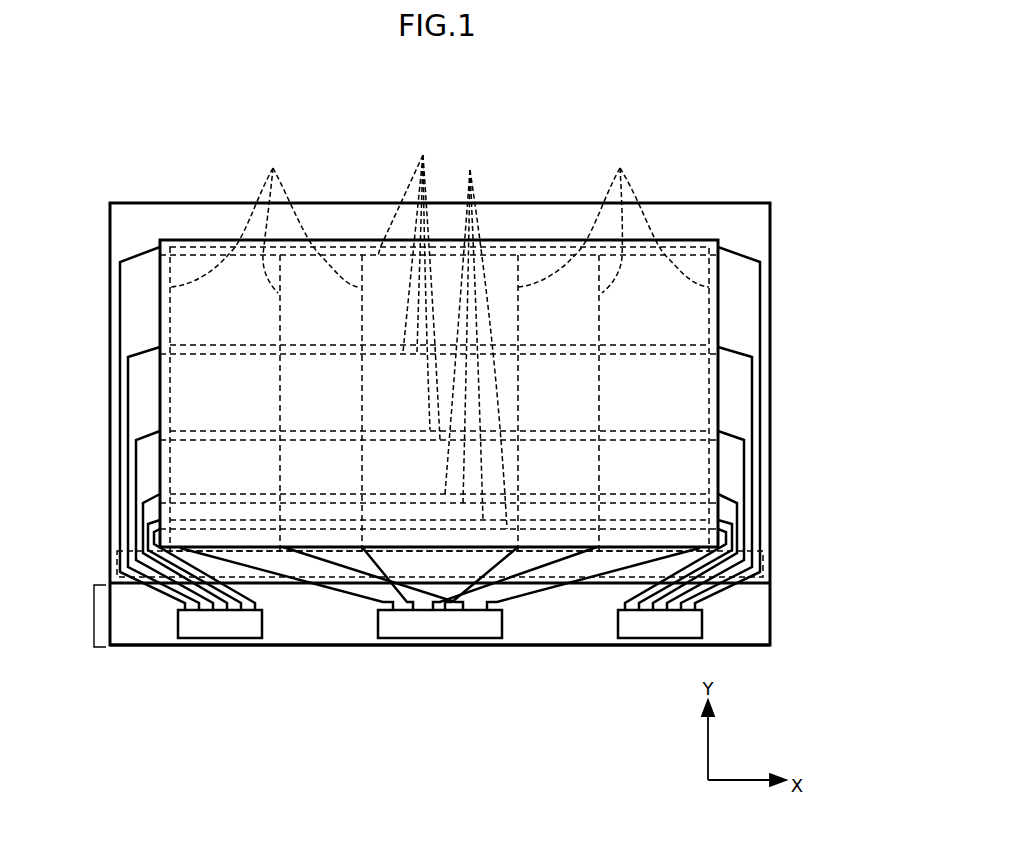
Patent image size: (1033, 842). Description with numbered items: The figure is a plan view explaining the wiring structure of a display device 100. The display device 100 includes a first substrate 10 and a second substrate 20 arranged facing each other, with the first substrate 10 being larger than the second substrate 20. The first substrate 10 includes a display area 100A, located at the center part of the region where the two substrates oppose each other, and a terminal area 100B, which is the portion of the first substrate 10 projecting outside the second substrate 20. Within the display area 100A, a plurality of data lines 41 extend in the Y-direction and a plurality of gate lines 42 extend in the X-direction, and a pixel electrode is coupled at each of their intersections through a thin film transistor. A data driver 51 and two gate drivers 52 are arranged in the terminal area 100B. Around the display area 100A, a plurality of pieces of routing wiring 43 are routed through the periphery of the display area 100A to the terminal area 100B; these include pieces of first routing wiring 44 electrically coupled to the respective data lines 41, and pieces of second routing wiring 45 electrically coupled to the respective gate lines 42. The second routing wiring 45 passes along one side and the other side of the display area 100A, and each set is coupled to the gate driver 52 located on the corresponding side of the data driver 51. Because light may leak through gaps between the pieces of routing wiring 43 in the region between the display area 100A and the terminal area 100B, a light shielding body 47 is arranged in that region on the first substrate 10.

The display device 100 is at (724, 154).
The display area 100A is at (498, 291).
The terminal area 100B is at (71, 616).
The first substrate 10 is at (770, 618).
The second substrate 20 is at (770, 330).
The data lines 41 is at (439, 219).
The gate lines 42 is at (442, 331).
The routing wiring 43 is at (440, 487).
The first routing wiring 44 is at (366, 553).
The second routing wiring 45 is at (155, 536).
The light shielding body 47 is at (278, 585).
The data driver 51 is at (441, 640).
The gate drivers 52 is at (226, 640).